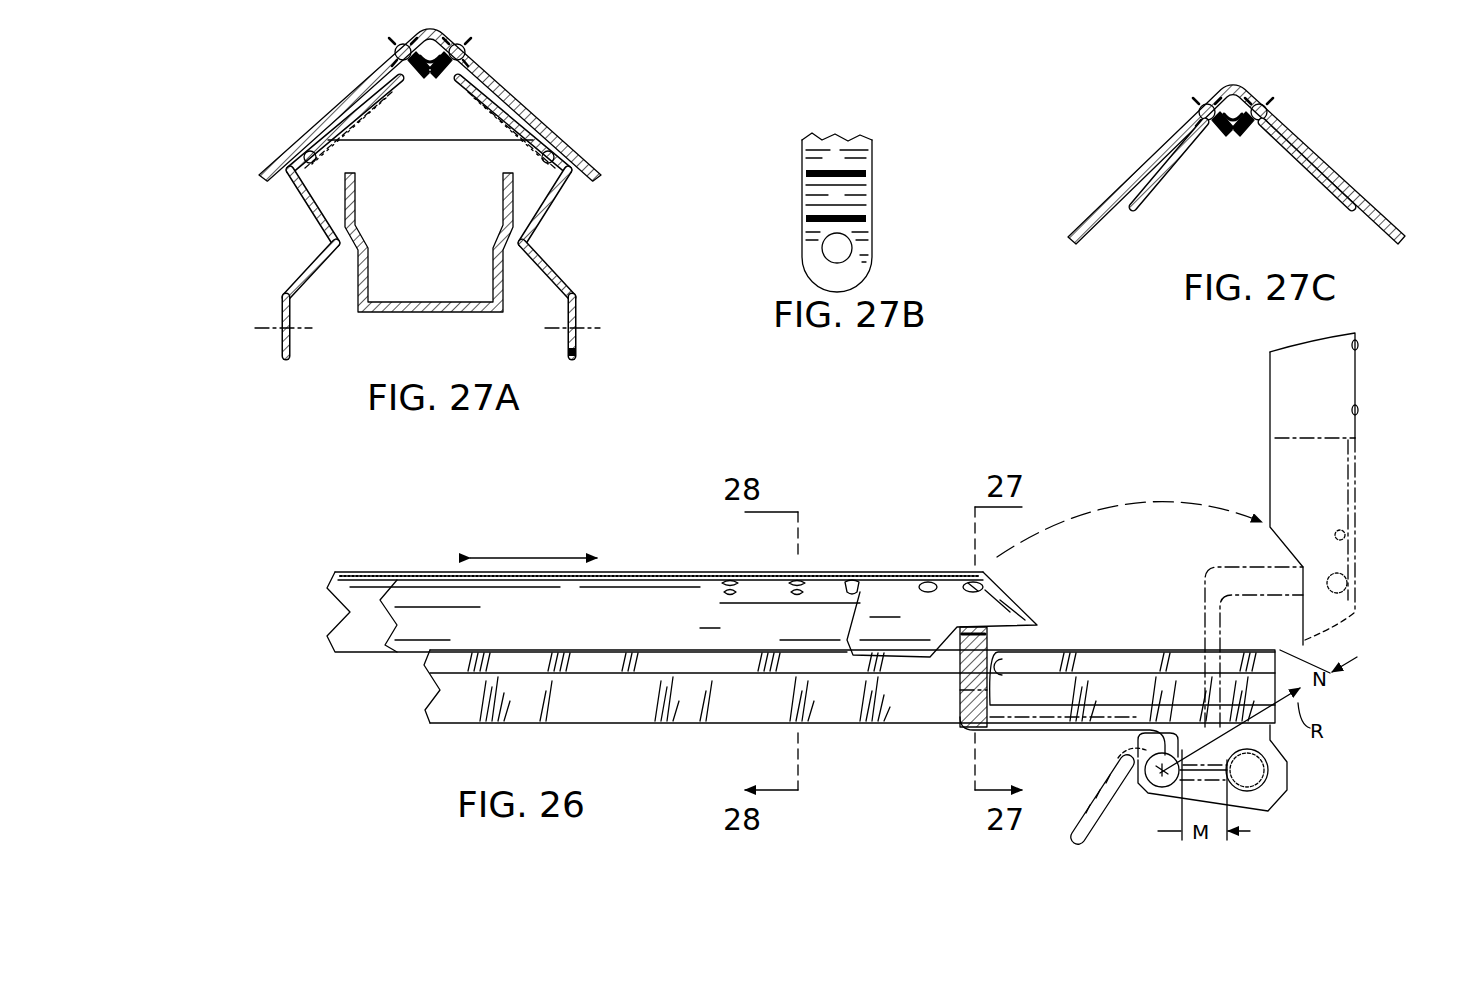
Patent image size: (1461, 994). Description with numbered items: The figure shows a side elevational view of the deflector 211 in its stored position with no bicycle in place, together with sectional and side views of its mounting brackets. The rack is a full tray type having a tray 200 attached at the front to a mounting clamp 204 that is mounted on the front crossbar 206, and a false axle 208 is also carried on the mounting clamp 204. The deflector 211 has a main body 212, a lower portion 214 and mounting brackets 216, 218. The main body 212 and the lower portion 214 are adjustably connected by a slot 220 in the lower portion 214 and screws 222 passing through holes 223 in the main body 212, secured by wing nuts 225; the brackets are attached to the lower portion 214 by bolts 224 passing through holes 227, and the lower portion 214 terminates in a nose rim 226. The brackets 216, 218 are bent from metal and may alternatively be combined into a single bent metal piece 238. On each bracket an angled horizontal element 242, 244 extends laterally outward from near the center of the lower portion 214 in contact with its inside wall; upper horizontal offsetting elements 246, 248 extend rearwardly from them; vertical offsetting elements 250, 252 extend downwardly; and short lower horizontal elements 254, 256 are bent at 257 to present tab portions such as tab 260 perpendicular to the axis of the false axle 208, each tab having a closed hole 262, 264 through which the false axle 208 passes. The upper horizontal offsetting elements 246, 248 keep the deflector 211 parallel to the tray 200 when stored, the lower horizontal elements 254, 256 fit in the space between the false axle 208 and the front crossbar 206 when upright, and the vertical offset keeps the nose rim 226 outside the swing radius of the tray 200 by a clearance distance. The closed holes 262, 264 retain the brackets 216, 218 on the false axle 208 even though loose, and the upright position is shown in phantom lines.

In FIG. 27A, the tray 200 is at (357, 207).
In FIG. 26, the tray 200 is at (582, 724).
In FIG. 26, the mounting clamp 204 is at (1284, 789).
In FIG. 26, the front crossbar 206 is at (1262, 793).
In FIG. 26, the false axle 208 is at (1156, 789).
In FIG. 26, the deflector 211 is at (690, 557).
In FIG. 26, the main body 212 is at (638, 572).
In FIG. 27A, the lower portion 214 is at (506, 94).
In FIG. 26, the lower portion 214 is at (860, 577).
In FIG. 27A, the mounting bracket 216 is at (284, 197).
In FIG. 27C, the mounting bracket 216 is at (1166, 150).
In FIG. 27A, the mounting bracket 218 is at (570, 198).
In FIG. 27B, the mounting bracket 218 is at (877, 182).
In FIG. 27C, the mounting bracket 218 is at (1348, 186).
In FIG. 26, the mounting bracket 218 is at (1030, 736).
In FIG. 26, the slot 220 is at (887, 575).
In FIG. 26, the screw 222 is at (800, 575).
In FIG. 26, the hole 223 is at (746, 574).
In FIG. 27A, the bolt 224 is at (466, 44).
In FIG. 26, the bolt 224 is at (986, 581).
In FIG. 26, the wing nut 225 is at (736, 578).
In FIG. 27A, the nose rim 226 is at (450, 142).
In FIG. 26, the nose rim 226 is at (1038, 622).
In FIG. 26, the hole 227 is at (948, 578).
In FIG. 27C, the single bent metal piece 238 is at (1308, 142).
In FIG. 27A, the angled horizontal element 242 is at (300, 150).
In FIG. 27A, the angled horizontal element 244 is at (552, 150).
In FIG. 26, the angled horizontal element 244 is at (1000, 631).
In FIG. 27A, the upper horizontal offsetting element 246 is at (312, 222).
In FIG. 27A, the upper horizontal offsetting element 248 is at (546, 224).
In FIG. 26, the upper horizontal offsetting element 248 is at (990, 678).
In FIG. 27A, the vertical offsetting element 250 is at (306, 270).
In FIG. 27A, the vertical offsetting element 252 is at (552, 262).
In FIG. 26, the vertical offsetting element 252 is at (1112, 722).
In FIG. 27A, the lower horizontal element 254 is at (281, 297).
In FIG. 27A, the lower horizontal element 256 is at (577, 298).
In FIG. 26, the lower horizontal element 256 is at (1148, 733).
In FIG. 26, the bend 257 is at (1160, 748).
In FIG. 27A, the tab portion 260 is at (576, 354).
In FIG. 26, the tab portion 260 is at (1125, 753).
In FIG. 27A, the closed hole 262 is at (282, 333).
In FIG. 27B, the closed hole 262 is at (853, 246).
In FIG. 26, the closed hole 262 is at (1094, 830).
In FIG. 27A, the closed hole 264 is at (567, 332).